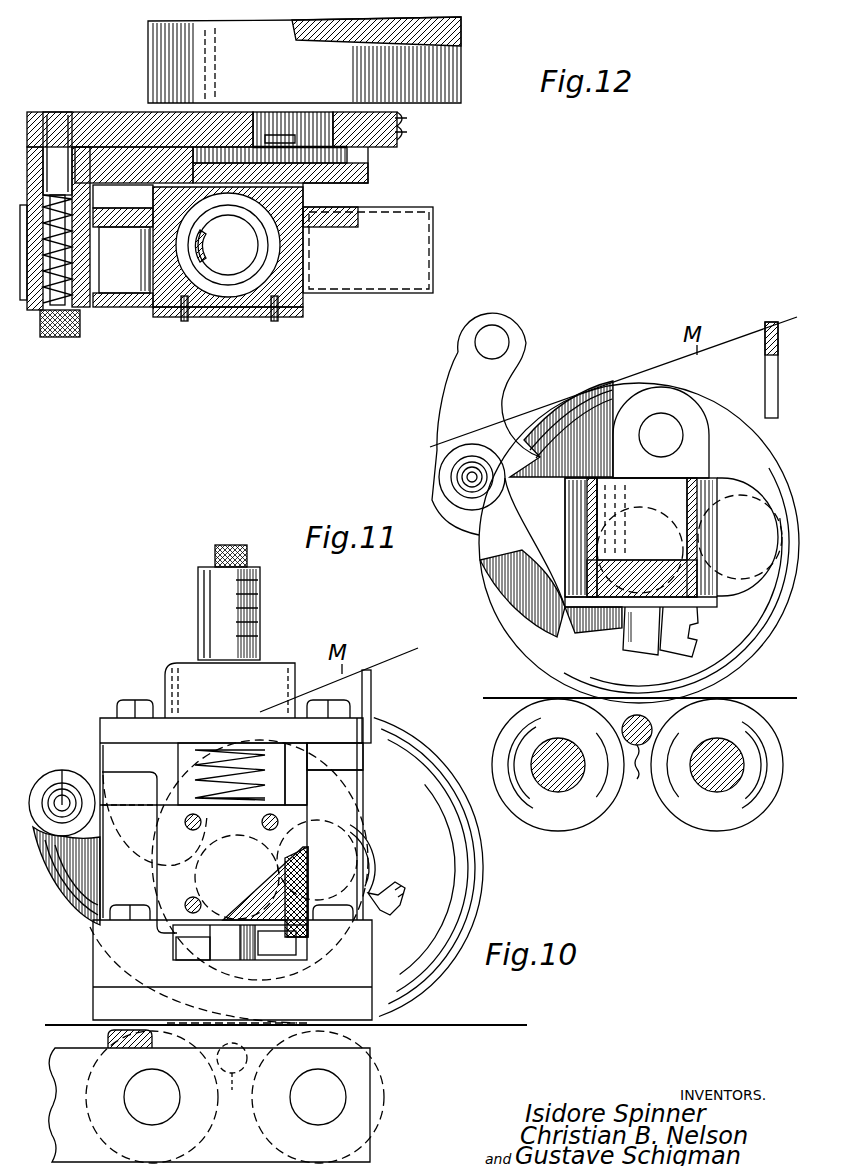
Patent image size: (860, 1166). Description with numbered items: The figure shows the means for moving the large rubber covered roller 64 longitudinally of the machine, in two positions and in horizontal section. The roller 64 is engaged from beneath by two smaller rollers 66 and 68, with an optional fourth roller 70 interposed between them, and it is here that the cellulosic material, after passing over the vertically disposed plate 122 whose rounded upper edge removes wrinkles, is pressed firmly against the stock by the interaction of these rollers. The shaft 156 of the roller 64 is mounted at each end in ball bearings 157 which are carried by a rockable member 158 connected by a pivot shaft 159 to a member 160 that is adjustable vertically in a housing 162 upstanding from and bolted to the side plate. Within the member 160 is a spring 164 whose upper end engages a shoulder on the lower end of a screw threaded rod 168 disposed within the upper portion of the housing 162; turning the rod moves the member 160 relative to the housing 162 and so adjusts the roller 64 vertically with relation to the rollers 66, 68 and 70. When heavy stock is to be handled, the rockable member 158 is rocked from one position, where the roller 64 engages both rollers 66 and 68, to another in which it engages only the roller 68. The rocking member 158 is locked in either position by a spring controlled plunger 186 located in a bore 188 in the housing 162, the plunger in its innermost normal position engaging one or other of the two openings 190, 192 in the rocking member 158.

In FIG. 12, the rubber covered roller 64 is at (166, 32).
In FIG. 10, the rubber covered roller 64 is at (496, 602).
In FIG. 11, the rubber covered roller 64 is at (472, 893).
In FIG. 10, the roller 66 is at (562, 828).
In FIG. 11, the roller 66 is at (112, 1042).
In FIG. 10, the roller 68 is at (705, 826).
In FIG. 11, the roller 68 is at (378, 1075).
In FIG. 10, the fourth roller 70 is at (637, 762).
In FIG. 11, the fourth roller 70 is at (232, 1083).
In FIG. 10, the vertically disposed plate 122 is at (763, 332).
In FIG. 11, the vertically disposed plate 122 is at (372, 705).
In FIG. 12, the shaft 156 is at (307, 112).
In FIG. 12, the ball bearings 157 is at (275, 134).
In FIG. 12, the rockable member 158 is at (122, 100).
In FIG. 10, the rockable member 158 is at (490, 408).
In FIG. 11, the rockable member 158 is at (378, 850).
In FIG. 10, the pivot shaft 159 is at (673, 428).
In FIG. 12, the member 160 is at (368, 181).
In FIG. 10, the member 160 is at (582, 545).
In FIG. 11, the member 160 is at (231, 843).
In FIG. 12, the housing 162 is at (300, 300).
In FIG. 10, the housing 162 is at (575, 488).
In FIG. 11, the housing 162 is at (345, 755).
In FIG. 11, the spring 164 is at (180, 760).
In FIG. 11, the screw threaded rod 168 is at (220, 555).
In FIG. 12, the spring controlled plunger 186 is at (81, 330).
In FIG. 10, the spring controlled plunger 186 is at (464, 468).
In FIG. 12, the bore 188 is at (76, 282).
In FIG. 10, the opening 190 is at (509, 340).
In FIG. 10, the opening 192 is at (438, 473).
In FIG. 11, the opening 192 is at (62, 791).